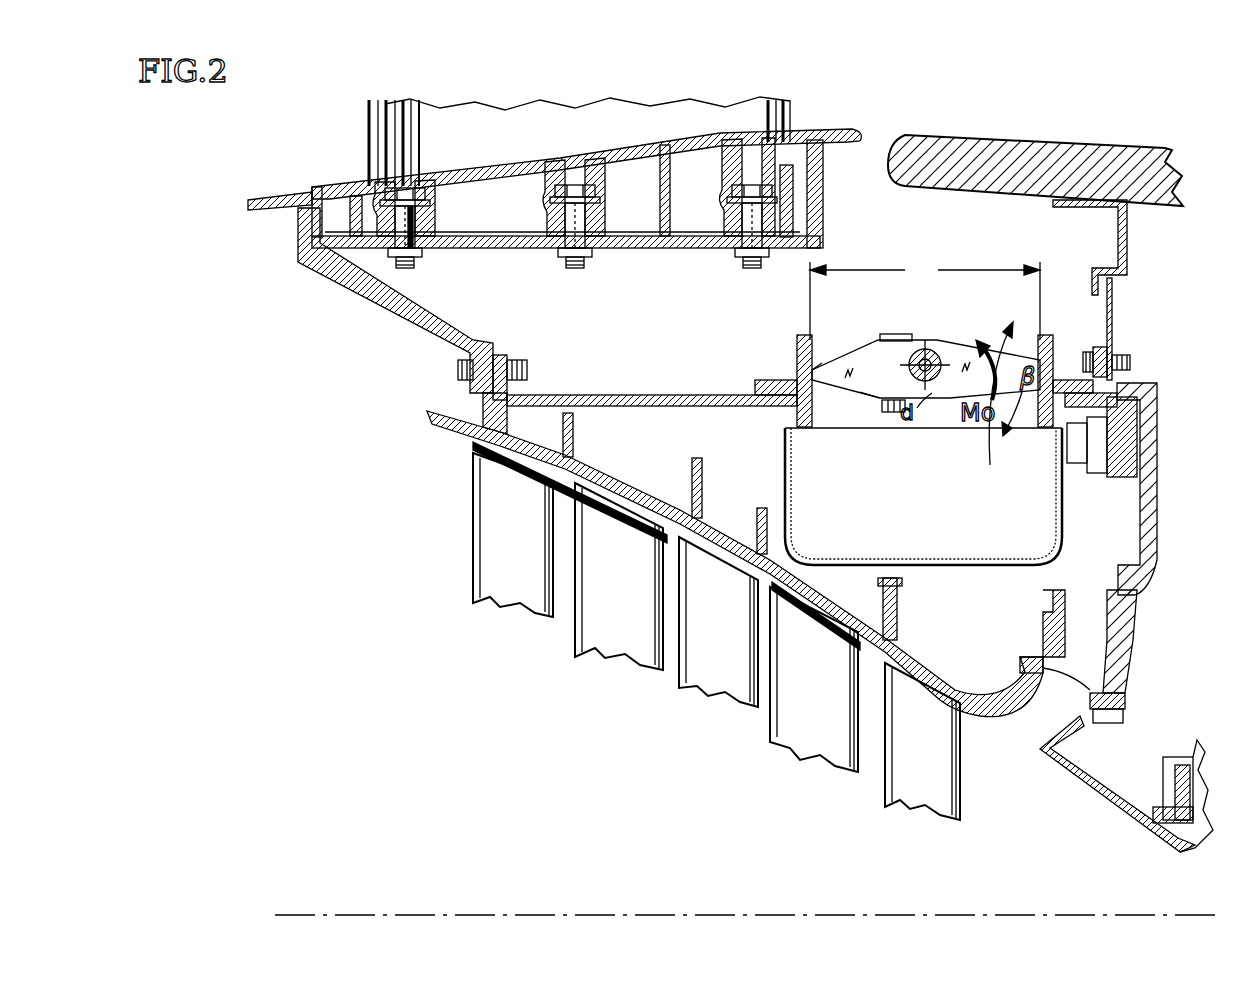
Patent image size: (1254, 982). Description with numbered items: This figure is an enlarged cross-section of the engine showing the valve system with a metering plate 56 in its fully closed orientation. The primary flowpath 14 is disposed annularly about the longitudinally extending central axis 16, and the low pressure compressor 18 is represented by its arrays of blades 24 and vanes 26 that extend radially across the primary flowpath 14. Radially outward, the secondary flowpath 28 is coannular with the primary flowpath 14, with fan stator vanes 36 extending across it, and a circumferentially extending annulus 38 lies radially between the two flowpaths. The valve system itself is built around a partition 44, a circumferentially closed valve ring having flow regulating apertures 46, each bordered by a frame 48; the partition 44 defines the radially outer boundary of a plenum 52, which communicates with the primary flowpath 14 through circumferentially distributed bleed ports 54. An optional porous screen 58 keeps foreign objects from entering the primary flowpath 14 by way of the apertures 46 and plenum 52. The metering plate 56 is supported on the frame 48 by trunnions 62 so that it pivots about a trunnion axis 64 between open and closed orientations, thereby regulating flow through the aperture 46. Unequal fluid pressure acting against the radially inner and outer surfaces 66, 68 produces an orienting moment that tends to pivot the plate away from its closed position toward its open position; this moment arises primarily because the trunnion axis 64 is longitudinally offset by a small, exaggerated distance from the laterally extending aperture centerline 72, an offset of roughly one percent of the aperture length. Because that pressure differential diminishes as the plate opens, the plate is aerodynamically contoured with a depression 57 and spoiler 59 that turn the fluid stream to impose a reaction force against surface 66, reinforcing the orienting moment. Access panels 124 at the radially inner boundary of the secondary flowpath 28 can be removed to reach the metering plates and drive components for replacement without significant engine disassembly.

The primary flowpath 14 is at (576, 764).
The central axis 16 is at (540, 915).
The low pressure compressor 18 is at (432, 618).
The blades 24 is at (523, 547).
The vanes 26 is at (634, 600).
The secondary flowpath 28 is at (573, 82).
The fan stator vanes 36 is at (573, 142).
The annulus 38 is at (653, 377).
The partition 44 is at (640, 406).
The flow regulating apertures 46 is at (806, 455).
The frame 48 is at (1053, 353).
The plenum 52 is at (973, 644).
The bleed ports 54 is at (1094, 644).
The metering plates 56 is at (870, 332).
The depression 57 is at (1000, 425).
The porous screen 58 is at (1066, 500).
The spoiler 59 is at (1040, 408).
The trunnions 62 is at (915, 358).
The trunnion axis 64 is at (940, 350).
The radially inner surface 66 is at (866, 390).
The radially outer surface 68 is at (822, 363).
The aperture centerline 72 is at (940, 362).
The access panels 124 is at (948, 140).